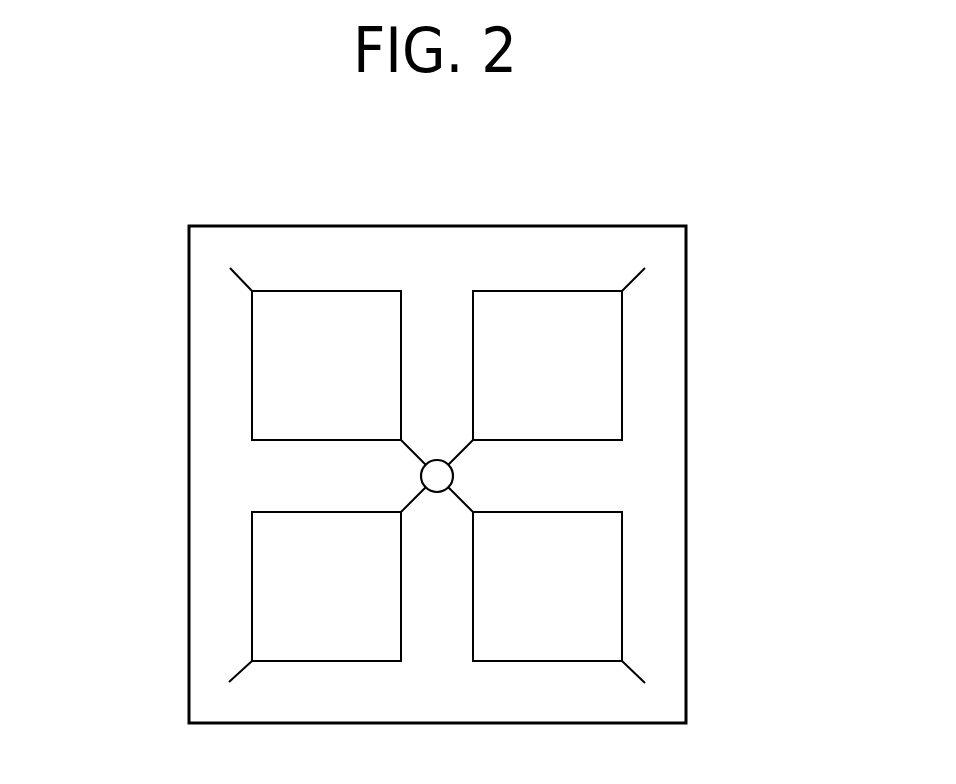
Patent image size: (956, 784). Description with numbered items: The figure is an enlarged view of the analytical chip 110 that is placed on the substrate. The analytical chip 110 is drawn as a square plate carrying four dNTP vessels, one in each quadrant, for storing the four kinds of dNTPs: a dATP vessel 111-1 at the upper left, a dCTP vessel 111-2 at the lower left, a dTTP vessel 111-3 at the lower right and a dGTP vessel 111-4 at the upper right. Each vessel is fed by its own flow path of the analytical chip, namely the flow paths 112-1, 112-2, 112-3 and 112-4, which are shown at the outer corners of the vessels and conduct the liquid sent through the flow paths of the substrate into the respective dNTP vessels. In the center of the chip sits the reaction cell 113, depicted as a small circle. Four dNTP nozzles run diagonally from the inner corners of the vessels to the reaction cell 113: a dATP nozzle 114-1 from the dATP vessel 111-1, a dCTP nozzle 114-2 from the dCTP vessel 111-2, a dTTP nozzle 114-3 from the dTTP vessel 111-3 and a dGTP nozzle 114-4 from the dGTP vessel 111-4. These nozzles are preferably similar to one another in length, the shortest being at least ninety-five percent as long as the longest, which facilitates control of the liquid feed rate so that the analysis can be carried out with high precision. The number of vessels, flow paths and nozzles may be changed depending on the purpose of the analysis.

The analytical chip 110 is at (305, 253).
The reaction cell 113 is at (438, 460).
The dATP vessel 111-1 is at (268, 345).
The dCTP vessel 111-2 is at (268, 586).
The dTTP vessel 111-3 is at (605, 586).
The dGTP vessel 111-4 is at (607, 345).
The flow path of analytical chip 112-1 is at (252, 291).
The flow path of analytical chip 112-2 is at (252, 661).
The flow path of analytical chip 112-3 is at (622, 661).
The flow path of analytical chip 112-4 is at (622, 291).
The dATP nozzle 114-1 is at (410, 448).
The dCTP nozzle 114-2 is at (413, 500).
The dTTP nozzle 114-3 is at (462, 500).
The dGTP nozzle 114-4 is at (465, 448).